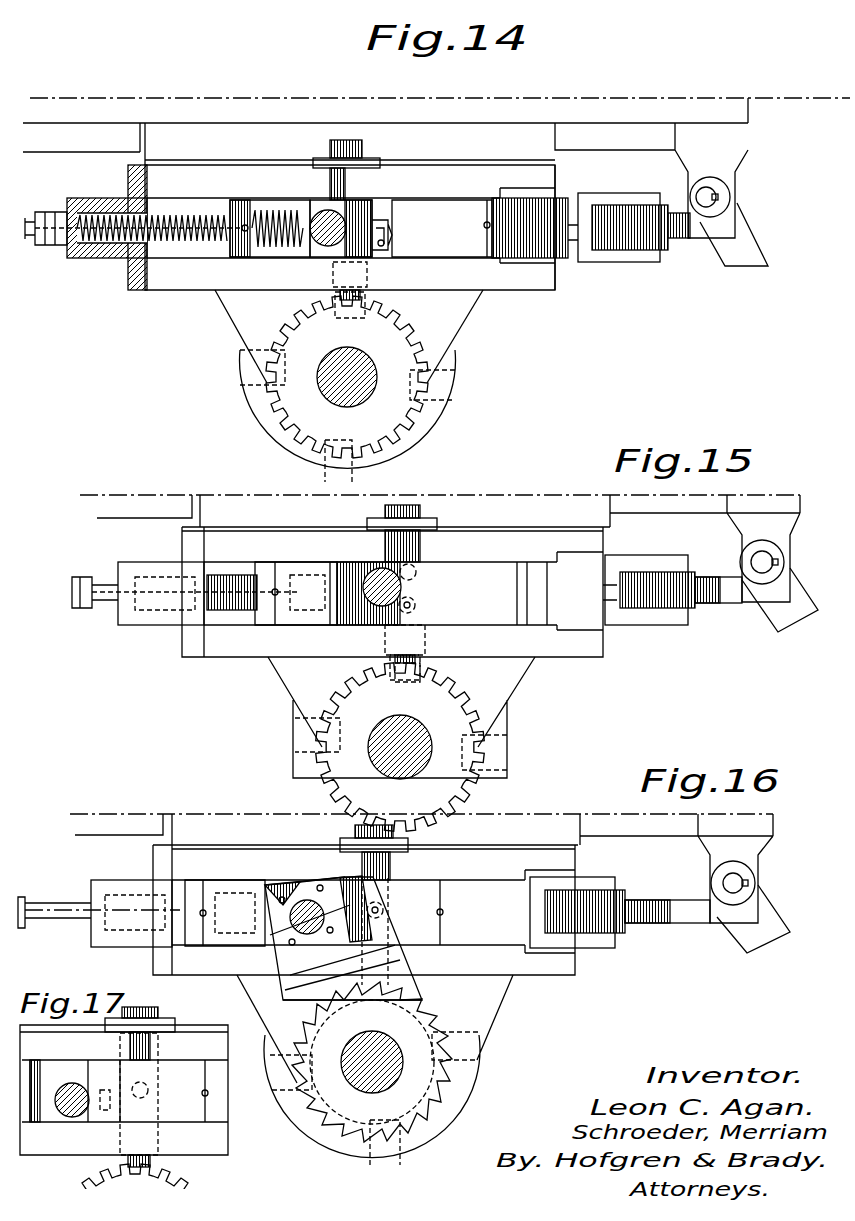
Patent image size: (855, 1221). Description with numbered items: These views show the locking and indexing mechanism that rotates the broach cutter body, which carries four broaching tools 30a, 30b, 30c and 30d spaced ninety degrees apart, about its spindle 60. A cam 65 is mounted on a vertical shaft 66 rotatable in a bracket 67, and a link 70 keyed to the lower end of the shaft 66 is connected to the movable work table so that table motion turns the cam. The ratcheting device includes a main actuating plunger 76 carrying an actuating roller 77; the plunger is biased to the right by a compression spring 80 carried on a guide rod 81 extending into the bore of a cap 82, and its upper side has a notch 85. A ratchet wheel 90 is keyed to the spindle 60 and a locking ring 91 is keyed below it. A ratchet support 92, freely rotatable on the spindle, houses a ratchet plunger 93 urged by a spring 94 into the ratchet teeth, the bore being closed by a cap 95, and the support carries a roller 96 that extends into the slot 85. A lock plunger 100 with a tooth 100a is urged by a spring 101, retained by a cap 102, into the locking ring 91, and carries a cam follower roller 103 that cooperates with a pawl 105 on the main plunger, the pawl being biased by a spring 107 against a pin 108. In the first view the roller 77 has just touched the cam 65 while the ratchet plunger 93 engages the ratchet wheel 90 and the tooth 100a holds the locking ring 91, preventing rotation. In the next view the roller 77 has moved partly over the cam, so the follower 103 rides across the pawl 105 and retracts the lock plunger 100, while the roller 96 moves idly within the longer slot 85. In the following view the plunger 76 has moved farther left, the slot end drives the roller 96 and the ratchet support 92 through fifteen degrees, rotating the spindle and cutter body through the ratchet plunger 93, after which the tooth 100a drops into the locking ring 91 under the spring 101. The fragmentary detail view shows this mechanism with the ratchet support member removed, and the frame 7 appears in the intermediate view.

In FIG. 15, the housing 7 is at (584, 605).
In FIG. 14, the broaching tool 30a is at (240, 380).
In FIG. 15, the broaching tool 30a is at (300, 752).
In FIG. 16, the broaching tool 30a is at (283, 1092).
In FIG. 14, the broaching tool 30b is at (325, 470).
In FIG. 16, the broaching tool 30b is at (400, 1152).
In FIG. 14, the broaching tool 30c is at (455, 378).
In FIG. 15, the broaching tool 30c is at (507, 752).
In FIG. 16, the broaching tool 30c is at (478, 1058).
In FIG. 14, the broaching tool 30d is at (372, 279).
In FIG. 16, the broaching tool 30d is at (300, 983).
In FIG. 14, the spindle 60 is at (322, 392).
In FIG. 15, the spindle 60 is at (382, 758).
In FIG. 16, the spindle 60 is at (352, 1086).
In FIG. 14, the cam 65 is at (685, 243).
In FIG. 15, the cam 65 is at (740, 602).
In FIG. 16, the cam 65 is at (680, 925).
In FIG. 14, the vertical shaft 66 is at (720, 197).
In FIG. 15, the vertical shaft 66 is at (776, 562).
In FIG. 16, the vertical shaft 66 is at (747, 885).
In FIG. 14, the bracket 67 is at (730, 190).
In FIG. 15, the bracket 67 is at (748, 549).
In FIG. 16, the bracket 67 is at (711, 866).
In FIG. 14, the link 70 is at (750, 240).
In FIG. 15, the link 70 is at (790, 625).
In FIG. 16, the link 70 is at (745, 936).
In FIG. 14, the main actuating plunger 76 is at (566, 263).
In FIG. 15, the main actuating plunger 76 is at (567, 593).
In FIG. 16, the main actuating plunger 76 is at (512, 935).
In FIG. 17, the main actuating plunger 76 is at (215, 1102).
In FIG. 14, the actuating roller 77 is at (622, 255).
In FIG. 15, the actuating roller 77 is at (662, 610).
In FIG. 16, the actuating roller 77 is at (592, 886).
In FIG. 14, the compression spring 80 is at (180, 240).
In FIG. 15, the compression spring 80 is at (230, 600).
In FIG. 14, the guide rod 81 is at (97, 241).
In FIG. 15, the guide rod 81 is at (100, 604).
In FIG. 16, the guide rod 81 is at (45, 905).
In FIG. 14, the cap 82 is at (122, 257).
In FIG. 15, the cap 82 is at (150, 626).
In FIG. 16, the cap 82 is at (110, 880).
In FIG. 14, the notch 85 is at (312, 258).
In FIG. 15, the notch 85 is at (322, 626).
In FIG. 16, the notch 85 is at (270, 886).
In FIG. 17, the notch 85 is at (48, 1066).
In FIG. 16, the ratchet wheel 90 is at (428, 1088).
In FIG. 14, the locking ring 91 is at (395, 414).
In FIG. 15, the locking ring 91 is at (475, 775).
In FIG. 17, the locking ring 91 is at (90, 1180).
In FIG. 16, the ratchet support 92 is at (293, 1008).
In FIG. 16, the ratchet plunger 93 is at (410, 962).
In FIG. 16, the spring 94 is at (388, 902).
In FIG. 16, the cap 95 is at (350, 880).
In FIG. 14, the roller 96 is at (330, 212).
In FIG. 15, the roller 96 is at (375, 568).
In FIG. 16, the roller 96 is at (272, 940).
In FIG. 17, the roller 96 is at (70, 1118).
In FIG. 14, the lock plunger 100 is at (333, 281).
In FIG. 15, the lock plunger 100 is at (381, 633).
In FIG. 17, the lock plunger 100 is at (158, 1146).
In FIG. 14, the tooth 100a is at (350, 312).
In FIG. 15, the tooth 100a is at (428, 640).
In FIG. 17, the tooth 100a is at (160, 1161).
In FIG. 14, the spring 101 is at (386, 154).
In FIG. 15, the spring 101 is at (385, 524).
In FIG. 16, the spring 101 is at (392, 853).
In FIG. 17, the spring 101 is at (166, 1020).
In FIG. 14, the cap 102 is at (343, 158).
In FIG. 15, the cap 102 is at (420, 512).
In FIG. 16, the cap 102 is at (396, 840).
In FIG. 17, the cap 102 is at (152, 1008).
In FIG. 14, the cam follower roller 103 is at (365, 215).
In FIG. 15, the cam follower roller 103 is at (440, 566).
In FIG. 16, the cam follower roller 103 is at (388, 910).
In FIG. 17, the cam follower roller 103 is at (150, 1089).
In FIG. 14, the pawl 105 is at (400, 219).
In FIG. 15, the pawl 105 is at (420, 586).
In FIG. 16, the pawl 105 is at (294, 884).
In FIG. 17, the pawl 105 is at (95, 1066).
In FIG. 14, the spring 107 is at (392, 232).
In FIG. 17, the spring 107 is at (105, 1089).
In FIG. 14, the pin 108 is at (396, 240).
In FIG. 15, the pin 108 is at (420, 603).
In FIG. 16, the pin 108 is at (392, 922).